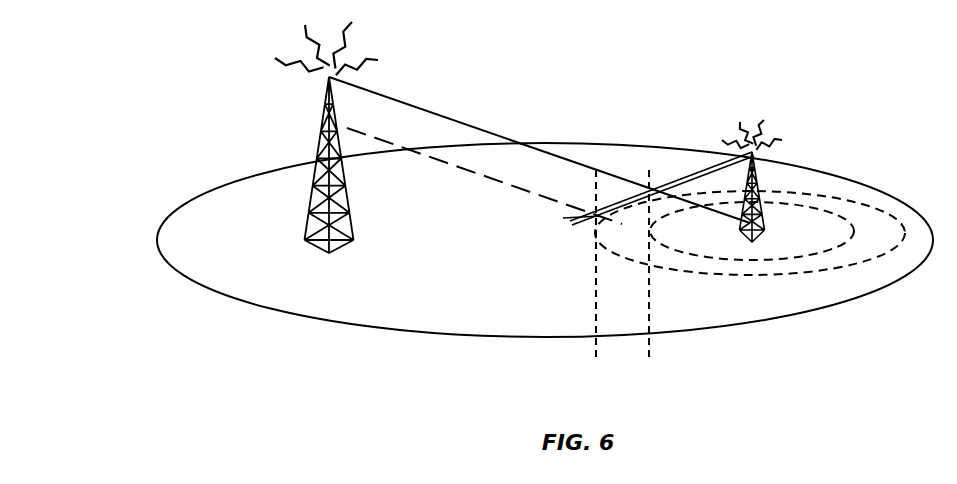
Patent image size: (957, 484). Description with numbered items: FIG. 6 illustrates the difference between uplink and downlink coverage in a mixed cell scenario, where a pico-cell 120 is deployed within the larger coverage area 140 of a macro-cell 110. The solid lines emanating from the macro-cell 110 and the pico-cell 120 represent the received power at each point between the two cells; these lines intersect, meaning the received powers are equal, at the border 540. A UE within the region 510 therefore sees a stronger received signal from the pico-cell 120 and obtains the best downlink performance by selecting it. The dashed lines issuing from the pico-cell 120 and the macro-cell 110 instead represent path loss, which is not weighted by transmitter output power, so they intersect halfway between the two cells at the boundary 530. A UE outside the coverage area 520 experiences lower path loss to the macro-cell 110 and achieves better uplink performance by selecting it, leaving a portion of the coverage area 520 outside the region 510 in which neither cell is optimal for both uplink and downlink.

The macro-cell 110 is at (307, 207).
The pico-cell 120 is at (755, 183).
The coverage area 140 is at (302, 320).
The region 510 is at (802, 260).
The coverage area 520 is at (758, 277).
The boundary 530 is at (596, 374).
The border 540 is at (649, 374).